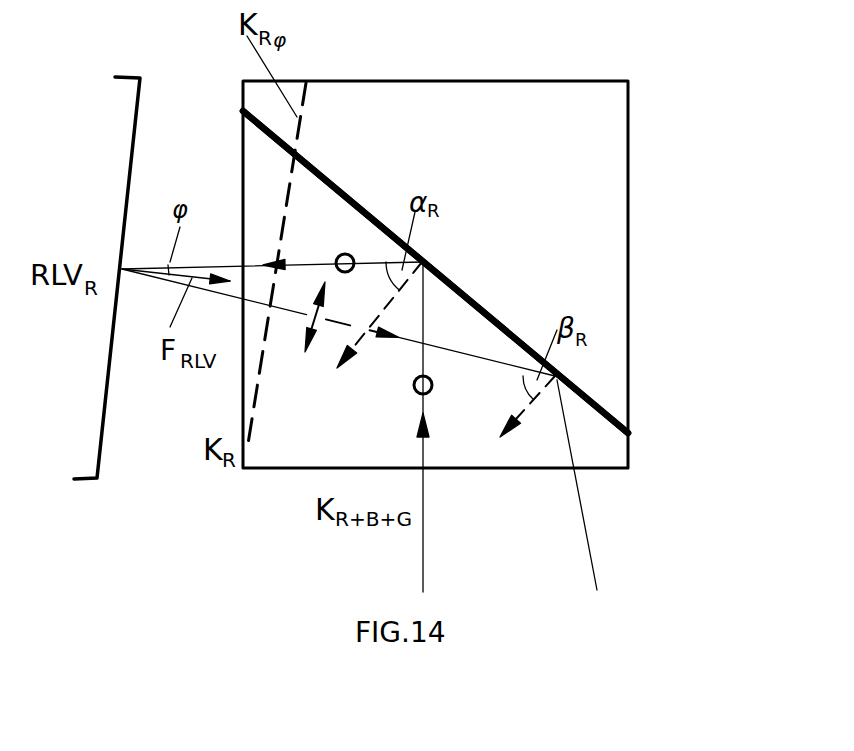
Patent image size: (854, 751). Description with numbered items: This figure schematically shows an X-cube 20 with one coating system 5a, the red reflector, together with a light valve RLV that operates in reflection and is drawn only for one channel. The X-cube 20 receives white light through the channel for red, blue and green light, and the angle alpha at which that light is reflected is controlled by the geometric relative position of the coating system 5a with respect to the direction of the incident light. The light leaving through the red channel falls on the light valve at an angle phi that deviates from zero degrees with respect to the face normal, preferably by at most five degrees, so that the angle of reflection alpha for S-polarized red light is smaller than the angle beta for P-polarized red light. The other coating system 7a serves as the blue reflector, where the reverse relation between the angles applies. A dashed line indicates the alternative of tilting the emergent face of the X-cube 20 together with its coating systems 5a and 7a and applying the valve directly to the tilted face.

The coating system 7a is at (602, 243).
The X-cube 20 is at (602, 144).
The coating system 5a is at (465, 293).